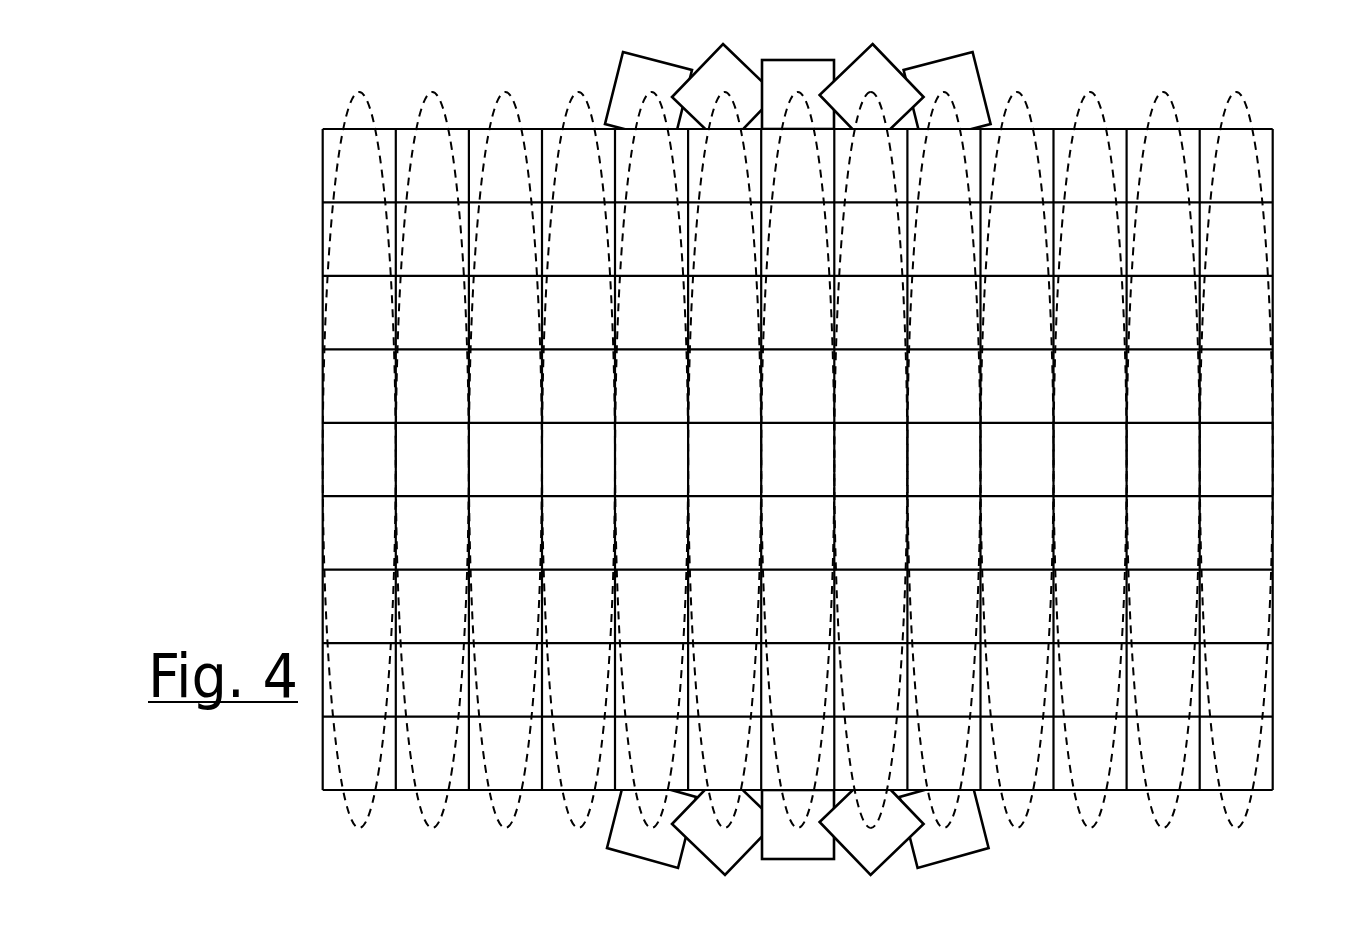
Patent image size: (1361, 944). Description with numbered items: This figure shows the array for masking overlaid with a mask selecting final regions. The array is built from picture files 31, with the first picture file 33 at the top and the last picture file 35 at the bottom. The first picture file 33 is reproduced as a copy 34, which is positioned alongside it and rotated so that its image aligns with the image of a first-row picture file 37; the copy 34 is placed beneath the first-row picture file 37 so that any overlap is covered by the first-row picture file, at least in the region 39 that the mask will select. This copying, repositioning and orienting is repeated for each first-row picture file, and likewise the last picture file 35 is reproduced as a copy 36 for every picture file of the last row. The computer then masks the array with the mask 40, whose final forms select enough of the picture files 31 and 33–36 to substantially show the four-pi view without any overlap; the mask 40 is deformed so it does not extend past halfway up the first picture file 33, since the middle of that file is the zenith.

The picture files 31 is at (1267, 148).
The first picture file 33 is at (803, 70).
The copy of the first picture file 34 is at (873, 63).
The last picture file 35 is at (803, 851).
The copy of the last picture file 36 is at (877, 858).
The first-row picture file 37 is at (892, 145).
The region 39 is at (871, 110).
The mask 40 is at (1238, 93).